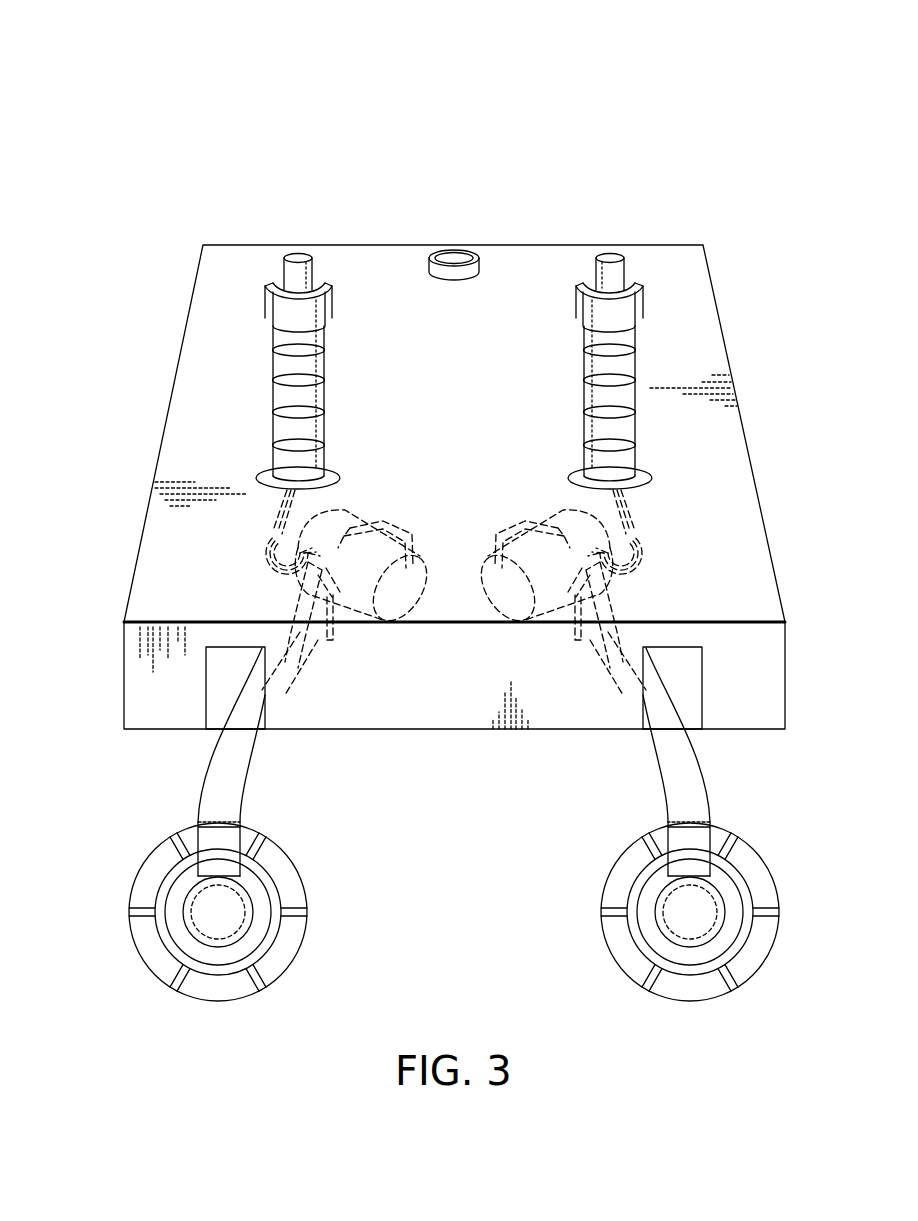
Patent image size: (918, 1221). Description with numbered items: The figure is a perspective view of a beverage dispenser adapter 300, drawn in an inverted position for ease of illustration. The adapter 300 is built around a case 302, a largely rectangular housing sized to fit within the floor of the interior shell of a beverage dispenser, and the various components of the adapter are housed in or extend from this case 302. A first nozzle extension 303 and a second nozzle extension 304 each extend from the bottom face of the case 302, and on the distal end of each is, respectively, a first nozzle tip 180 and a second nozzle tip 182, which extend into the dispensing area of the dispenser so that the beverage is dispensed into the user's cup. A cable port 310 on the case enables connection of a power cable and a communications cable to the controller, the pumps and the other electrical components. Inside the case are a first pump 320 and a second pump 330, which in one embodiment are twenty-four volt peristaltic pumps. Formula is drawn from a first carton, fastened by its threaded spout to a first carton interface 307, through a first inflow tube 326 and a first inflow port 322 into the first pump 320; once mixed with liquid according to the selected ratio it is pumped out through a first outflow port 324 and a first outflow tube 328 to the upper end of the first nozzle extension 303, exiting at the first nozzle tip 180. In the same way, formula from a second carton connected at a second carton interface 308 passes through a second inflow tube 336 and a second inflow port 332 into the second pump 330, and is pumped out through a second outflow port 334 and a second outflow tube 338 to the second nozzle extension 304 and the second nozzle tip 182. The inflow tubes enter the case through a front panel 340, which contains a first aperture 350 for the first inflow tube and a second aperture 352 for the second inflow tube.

The dispenser adapter 300 is at (74, 72).
The case 302 is at (747, 432).
The first nozzle tip 180 is at (296, 256).
The second nozzle tip 182 is at (610, 256).
The first nozzle extension 303 is at (325, 420).
The second nozzle extension 304 is at (583, 420).
The cable port 310 is at (452, 256).
The first pump 320 is at (352, 520).
The first inflow port 322 is at (295, 590).
The first outflow port 324 is at (268, 552).
The first inflow tube 326 is at (340, 643).
The first outflow tube 328 is at (257, 540).
The second pump 330 is at (556, 520).
The second inflow port 332 is at (613, 590).
The second outflow port 334 is at (640, 552).
The second inflow tube 336 is at (568, 643).
The second outflow tube 338 is at (651, 540).
The front panel 340 is at (477, 693).
The first aperture 350 is at (212, 655).
The second aperture 352 is at (696, 655).
The first carton interface 307 is at (195, 996).
The second carton interface 308 is at (713, 996).